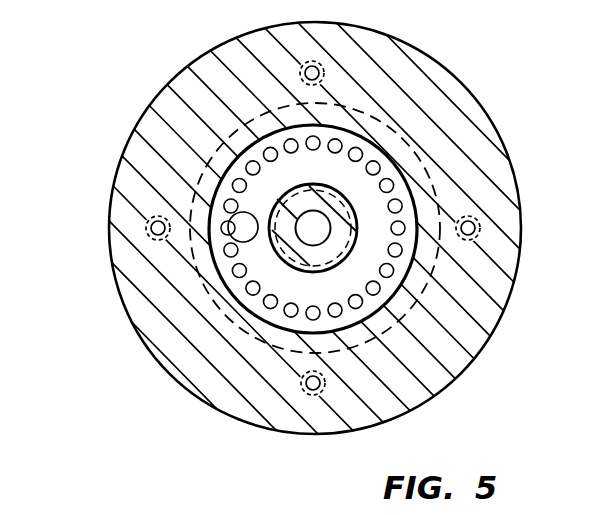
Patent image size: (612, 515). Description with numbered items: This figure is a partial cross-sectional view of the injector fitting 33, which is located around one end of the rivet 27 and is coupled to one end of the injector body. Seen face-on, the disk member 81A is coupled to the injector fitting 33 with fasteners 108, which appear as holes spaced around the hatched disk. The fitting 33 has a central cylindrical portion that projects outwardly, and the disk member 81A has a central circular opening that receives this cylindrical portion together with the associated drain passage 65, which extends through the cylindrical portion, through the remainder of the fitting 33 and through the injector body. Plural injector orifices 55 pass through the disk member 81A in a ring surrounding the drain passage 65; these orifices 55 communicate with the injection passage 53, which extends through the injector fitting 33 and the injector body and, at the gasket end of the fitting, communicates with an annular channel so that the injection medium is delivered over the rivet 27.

The fasteners 108 is at (323, 72).
The disk member 81A is at (128, 308).
The rivet 27 is at (385, 197).
The injector orifices 55 is at (378, 163).
The injection passage 53 is at (232, 217).
The injector fitting 33 is at (323, 240).
The drain passage 65 is at (324, 239).